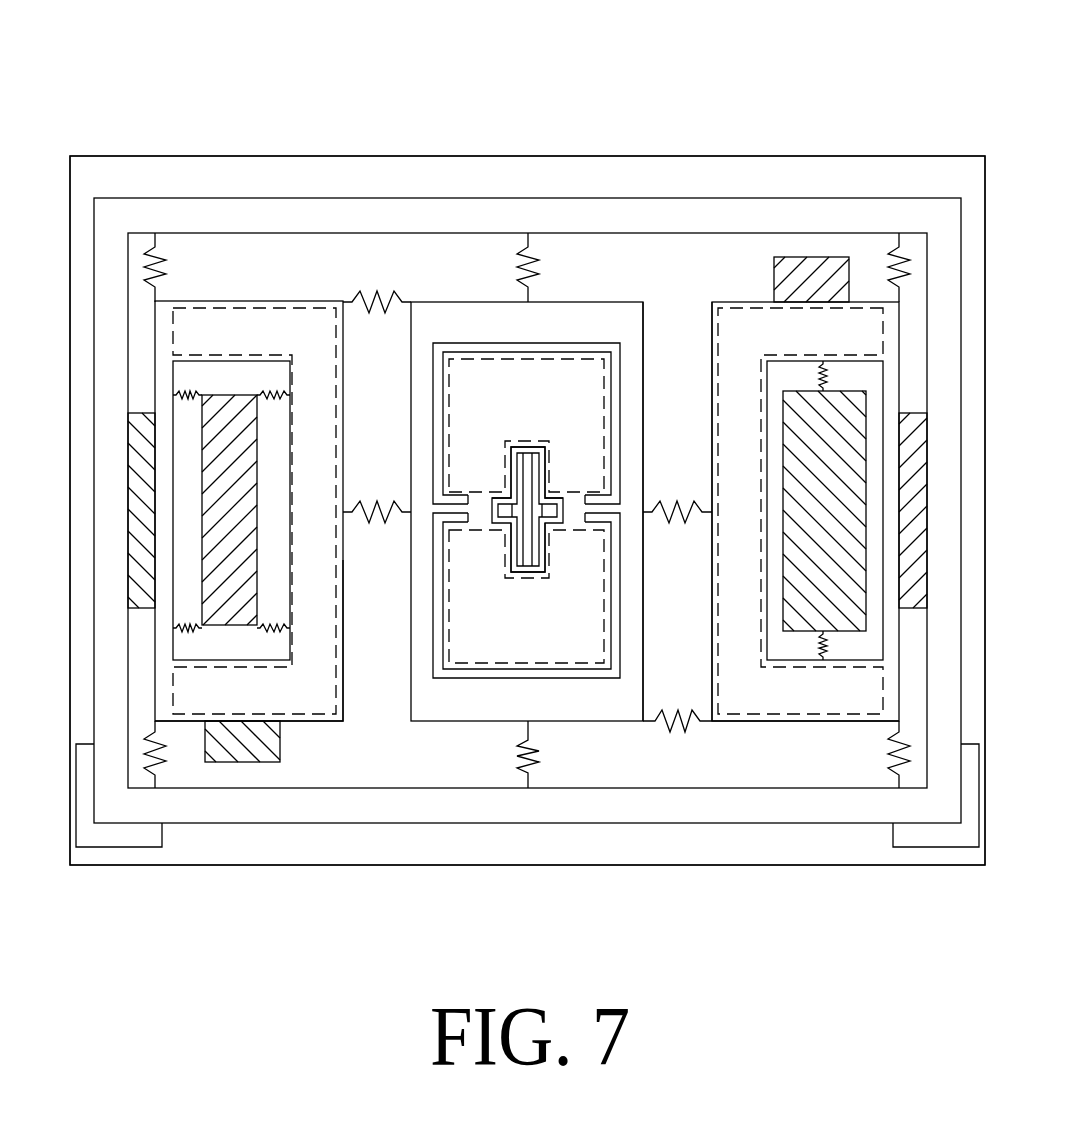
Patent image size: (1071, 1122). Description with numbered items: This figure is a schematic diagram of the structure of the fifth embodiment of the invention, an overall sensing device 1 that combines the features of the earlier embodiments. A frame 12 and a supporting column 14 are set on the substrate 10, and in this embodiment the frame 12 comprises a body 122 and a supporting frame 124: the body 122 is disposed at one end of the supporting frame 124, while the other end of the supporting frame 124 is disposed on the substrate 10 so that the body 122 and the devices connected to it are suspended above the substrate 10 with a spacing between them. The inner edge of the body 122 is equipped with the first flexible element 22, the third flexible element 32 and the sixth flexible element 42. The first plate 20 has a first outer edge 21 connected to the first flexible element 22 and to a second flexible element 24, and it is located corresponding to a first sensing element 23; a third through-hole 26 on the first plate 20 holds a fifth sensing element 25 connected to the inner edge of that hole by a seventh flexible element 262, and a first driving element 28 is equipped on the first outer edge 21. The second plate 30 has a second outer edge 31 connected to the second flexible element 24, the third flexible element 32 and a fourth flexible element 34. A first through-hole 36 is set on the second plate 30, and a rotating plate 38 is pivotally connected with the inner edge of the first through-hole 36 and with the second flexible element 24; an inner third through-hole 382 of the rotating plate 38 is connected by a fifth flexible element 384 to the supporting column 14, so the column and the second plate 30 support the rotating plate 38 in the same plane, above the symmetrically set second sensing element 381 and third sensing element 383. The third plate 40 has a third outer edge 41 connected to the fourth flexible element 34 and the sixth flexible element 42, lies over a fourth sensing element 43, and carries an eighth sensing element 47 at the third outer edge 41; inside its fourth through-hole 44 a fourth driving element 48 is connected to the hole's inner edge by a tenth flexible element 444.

The optical image stabilization device 1 is at (908, 69).
The substrate 10 is at (118, 155).
The frame 12 is at (252, 70).
The body 122 is at (233, 198).
The supporting frame 124 is at (132, 847).
The supporting column 14 is at (552, 502).
The first plate 20 is at (313, 300).
The first outer edge 21 is at (352, 688).
The first flexible element 22 is at (160, 268).
The first sensing element 23 is at (323, 713).
The second flexible element 24 is at (378, 530).
The fifth sensing element 25 is at (205, 630).
The third through-hole 26 is at (293, 389).
The seventh flexible element 262 is at (272, 632).
The first driving element 28 is at (253, 763).
The second plate 30 is at (450, 302).
The second outer edge 31 is at (655, 340).
The third flexible element 32 is at (538, 282).
The fourth flexible element 34 is at (682, 528).
The first through-hole 36 is at (488, 338).
The rotating plate 38 is at (488, 666).
The second sensing element 381 is at (582, 666).
The third through-hole 382 is at (504, 548).
The third sensing element 383 is at (577, 358).
The fifth flexible element 384 is at (522, 498).
The third plate 40 is at (750, 302).
The third outer edge 41 is at (702, 377).
The sixth flexible element 42 is at (888, 277).
The fourth sensing element 43 is at (737, 713).
The fourth through-hole 44 is at (764, 397).
The tenth flexible element 444 is at (822, 645).
The eighth sensing element 47 is at (812, 257).
The fourth driving element 48 is at (843, 632).